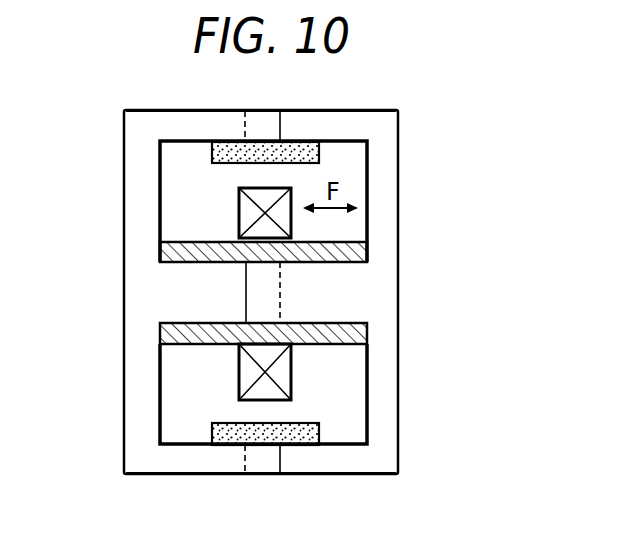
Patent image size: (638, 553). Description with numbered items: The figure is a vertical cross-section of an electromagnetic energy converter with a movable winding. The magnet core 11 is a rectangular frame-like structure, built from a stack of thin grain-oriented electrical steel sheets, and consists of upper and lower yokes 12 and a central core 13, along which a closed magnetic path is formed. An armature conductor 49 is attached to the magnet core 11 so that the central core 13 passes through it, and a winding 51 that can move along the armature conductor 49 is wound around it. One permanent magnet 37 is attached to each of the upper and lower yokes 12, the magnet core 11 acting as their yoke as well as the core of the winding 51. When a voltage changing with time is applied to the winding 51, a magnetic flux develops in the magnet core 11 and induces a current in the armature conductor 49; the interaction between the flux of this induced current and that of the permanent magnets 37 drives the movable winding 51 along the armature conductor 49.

The magnet core 11 is at (403, 125).
The yokes 12 is at (173, 130).
The central core 13 is at (338, 291).
The permanent magnets 37 is at (320, 152).
The armature conductor 49 is at (365, 336).
The winding 51 is at (243, 213).